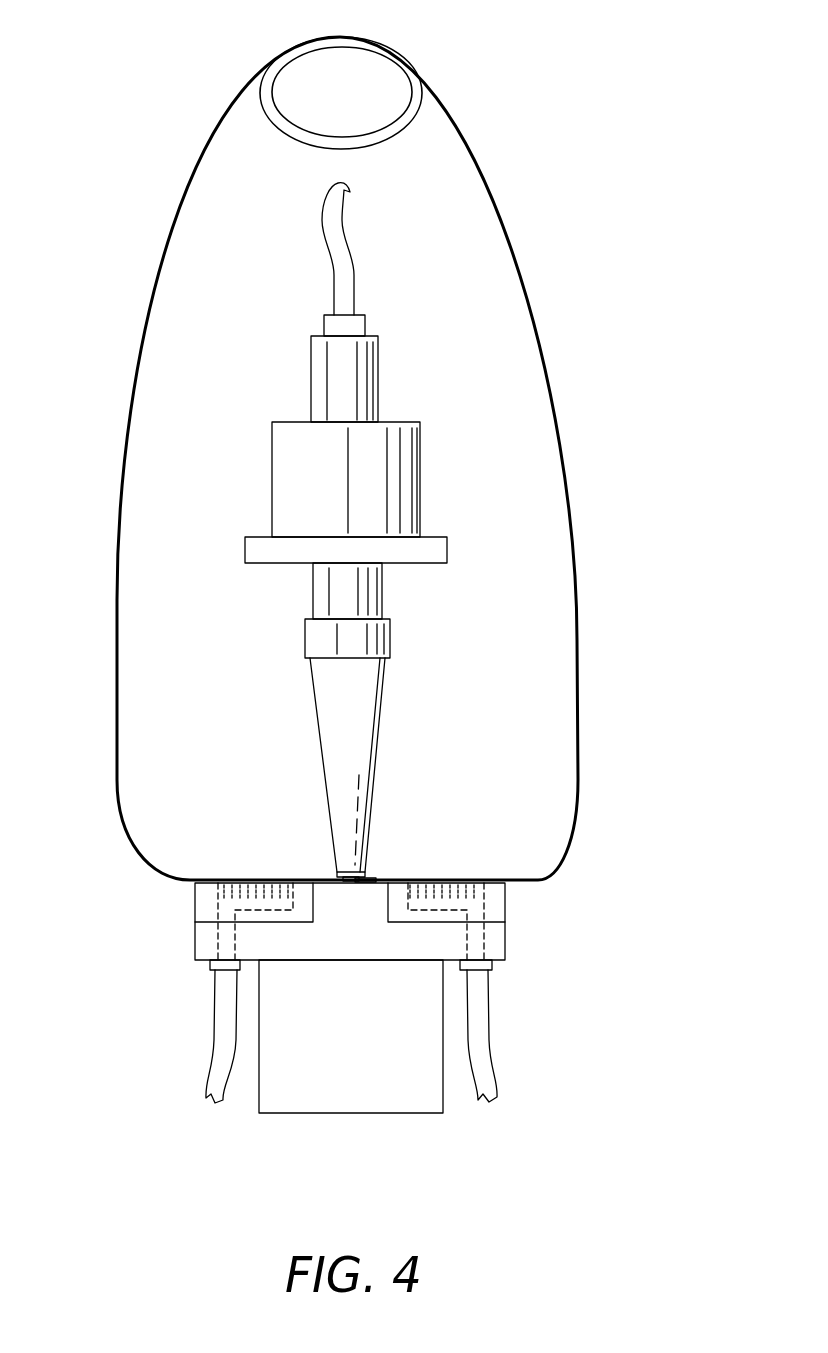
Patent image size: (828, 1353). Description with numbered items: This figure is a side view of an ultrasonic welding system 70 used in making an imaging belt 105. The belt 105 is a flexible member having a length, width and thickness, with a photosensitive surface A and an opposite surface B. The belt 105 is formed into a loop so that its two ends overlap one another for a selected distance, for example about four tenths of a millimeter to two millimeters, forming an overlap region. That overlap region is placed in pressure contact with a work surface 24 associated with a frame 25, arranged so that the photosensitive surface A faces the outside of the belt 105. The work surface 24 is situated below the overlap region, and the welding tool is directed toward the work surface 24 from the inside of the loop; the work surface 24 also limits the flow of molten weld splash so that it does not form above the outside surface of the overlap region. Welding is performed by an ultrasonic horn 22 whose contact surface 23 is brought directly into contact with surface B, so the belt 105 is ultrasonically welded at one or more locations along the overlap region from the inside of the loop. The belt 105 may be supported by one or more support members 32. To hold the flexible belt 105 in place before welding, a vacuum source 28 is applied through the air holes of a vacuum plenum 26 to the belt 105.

The ultrasonic welding system 70 is at (582, 279).
The belt 105 is at (195, 193).
The support member 32 is at (390, 135).
The ultrasonic horn 22 is at (337, 728).
The contact surface 23 is at (347, 874).
The work surface 24 is at (375, 878).
The vacuum plenum 26 is at (198, 907).
The frame 25 is at (353, 1113).
The vacuum source 28 is at (214, 1117).
The photosensitive surface A is at (567, 475).
The surface B is at (568, 508).